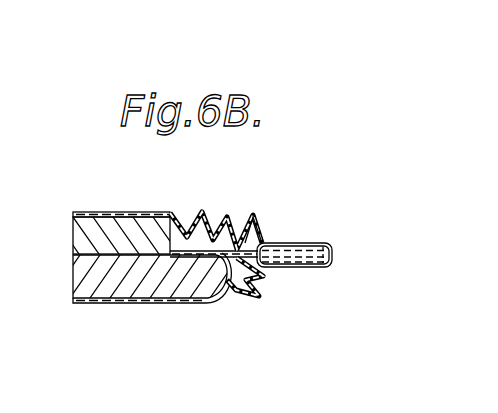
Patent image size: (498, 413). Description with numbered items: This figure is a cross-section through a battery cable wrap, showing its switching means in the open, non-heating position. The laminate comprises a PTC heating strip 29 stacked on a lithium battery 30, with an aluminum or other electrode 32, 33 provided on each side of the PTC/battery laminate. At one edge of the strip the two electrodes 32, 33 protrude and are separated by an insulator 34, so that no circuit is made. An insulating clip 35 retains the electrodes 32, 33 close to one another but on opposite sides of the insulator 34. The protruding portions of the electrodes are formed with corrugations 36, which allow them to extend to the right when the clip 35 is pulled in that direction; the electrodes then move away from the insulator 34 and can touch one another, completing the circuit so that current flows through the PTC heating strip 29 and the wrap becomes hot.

The PTC heating strip 29 is at (105, 233).
The electrode 32 is at (149, 211).
The corrugations 36 is at (227, 220).
The insulator 34 is at (253, 233).
The insulating clip 35 is at (305, 243).
The lithium battery 30 is at (101, 277).
The electrode 33 is at (150, 304).